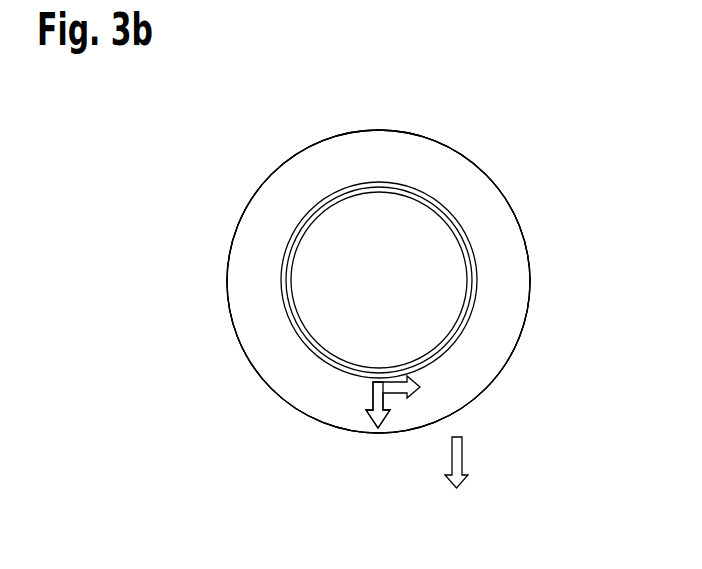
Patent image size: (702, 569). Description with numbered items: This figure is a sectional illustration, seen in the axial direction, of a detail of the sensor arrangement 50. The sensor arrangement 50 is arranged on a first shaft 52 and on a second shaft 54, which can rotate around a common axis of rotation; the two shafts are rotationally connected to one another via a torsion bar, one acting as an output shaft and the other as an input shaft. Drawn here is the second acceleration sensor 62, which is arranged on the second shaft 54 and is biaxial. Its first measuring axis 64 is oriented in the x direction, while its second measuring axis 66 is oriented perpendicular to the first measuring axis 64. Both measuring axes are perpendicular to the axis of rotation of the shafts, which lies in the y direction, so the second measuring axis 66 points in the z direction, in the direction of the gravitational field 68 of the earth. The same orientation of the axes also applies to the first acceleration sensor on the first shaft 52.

The sensor arrangement 50 is at (283, 130).
The first shaft 52 is at (293, 270).
The second shaft 54 is at (517, 282).
The second acceleration sensor 62 is at (358, 435).
The first measuring axis 64 is at (393, 382).
The second measuring axis 66 is at (390, 405).
The gravitational field 68 is at (465, 462).